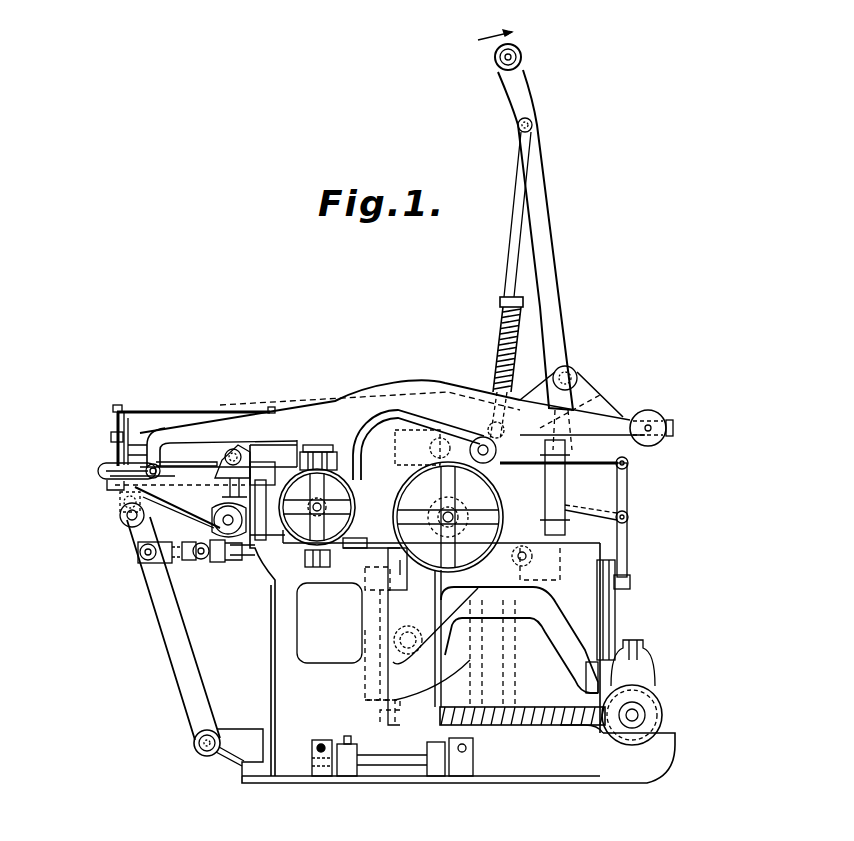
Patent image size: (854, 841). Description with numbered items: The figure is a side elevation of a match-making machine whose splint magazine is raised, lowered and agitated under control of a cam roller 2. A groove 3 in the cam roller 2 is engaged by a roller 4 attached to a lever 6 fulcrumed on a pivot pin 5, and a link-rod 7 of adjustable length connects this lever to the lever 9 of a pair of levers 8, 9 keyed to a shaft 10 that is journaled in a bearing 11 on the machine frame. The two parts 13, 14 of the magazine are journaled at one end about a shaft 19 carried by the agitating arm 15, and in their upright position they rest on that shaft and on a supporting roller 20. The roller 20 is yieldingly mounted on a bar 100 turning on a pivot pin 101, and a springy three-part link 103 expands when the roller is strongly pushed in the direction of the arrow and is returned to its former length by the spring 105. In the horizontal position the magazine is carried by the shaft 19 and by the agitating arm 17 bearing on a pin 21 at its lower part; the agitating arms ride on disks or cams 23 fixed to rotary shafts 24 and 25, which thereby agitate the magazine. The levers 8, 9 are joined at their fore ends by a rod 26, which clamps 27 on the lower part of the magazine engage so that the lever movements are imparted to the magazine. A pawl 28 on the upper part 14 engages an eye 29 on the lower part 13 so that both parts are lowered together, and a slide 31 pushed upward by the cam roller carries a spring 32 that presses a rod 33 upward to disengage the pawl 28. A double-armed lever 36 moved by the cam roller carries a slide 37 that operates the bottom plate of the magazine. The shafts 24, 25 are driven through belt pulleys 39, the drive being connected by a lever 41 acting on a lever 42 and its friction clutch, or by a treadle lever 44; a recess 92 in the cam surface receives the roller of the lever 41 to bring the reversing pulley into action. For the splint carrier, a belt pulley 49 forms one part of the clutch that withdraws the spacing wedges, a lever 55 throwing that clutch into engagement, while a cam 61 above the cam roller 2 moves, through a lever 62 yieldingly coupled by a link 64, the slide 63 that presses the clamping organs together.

The cam roller 2 is at (617, 599).
The groove 3 is at (579, 667).
The roller 4 is at (560, 606).
The pivot pin 5 is at (432, 663).
The lever 6 is at (478, 628).
The link-rod 7 is at (600, 403).
The lever 8 is at (385, 400).
The lever 9 is at (571, 372).
The shaft 10 is at (480, 438).
The bearing 11 is at (410, 410).
The lower part of the splint magazine 13 is at (135, 450).
The upper part of the splint magazine 14 is at (133, 420).
The agitating arm 15 is at (345, 440).
The agitating arm 17 is at (258, 430).
The shaft 19 is at (410, 447).
The supporting roller 20 is at (494, 60).
The pin 21 is at (234, 448).
The disks or cams 23 is at (233, 545).
The rotary shaft 24 is at (458, 512).
The rotary shaft 25 is at (215, 526).
The rod 26 is at (120, 508).
The clamps 27 is at (98, 471).
The pawl 28 is at (110, 424).
The eye 29 is at (110, 450).
The slide 31 is at (646, 446).
The spring 32 is at (500, 396).
The rod 33 is at (190, 411).
The double-armed lever 36 is at (628, 520).
The slide 37 is at (628, 470).
The belt pulley 39 is at (408, 582).
The lever 41 is at (350, 776).
The lever 42 is at (372, 699).
The lever having a treadle 44 is at (330, 776).
The belt pulley clutch part 49 is at (300, 543).
The lever 55 is at (322, 564).
The cam 61 is at (545, 566).
The lever 62 is at (164, 650).
The slide 63 is at (108, 484).
The link 64 is at (152, 568).
The recess 92 is at (542, 727).
The bar 100 is at (548, 235).
The pivot pin 101 is at (630, 506).
The springy three-part link 103 is at (507, 270).
The spring 105 is at (499, 326).